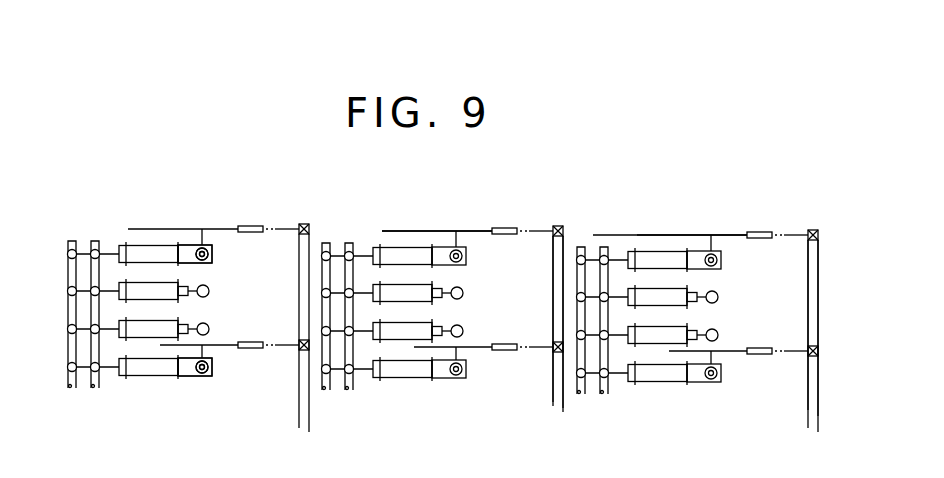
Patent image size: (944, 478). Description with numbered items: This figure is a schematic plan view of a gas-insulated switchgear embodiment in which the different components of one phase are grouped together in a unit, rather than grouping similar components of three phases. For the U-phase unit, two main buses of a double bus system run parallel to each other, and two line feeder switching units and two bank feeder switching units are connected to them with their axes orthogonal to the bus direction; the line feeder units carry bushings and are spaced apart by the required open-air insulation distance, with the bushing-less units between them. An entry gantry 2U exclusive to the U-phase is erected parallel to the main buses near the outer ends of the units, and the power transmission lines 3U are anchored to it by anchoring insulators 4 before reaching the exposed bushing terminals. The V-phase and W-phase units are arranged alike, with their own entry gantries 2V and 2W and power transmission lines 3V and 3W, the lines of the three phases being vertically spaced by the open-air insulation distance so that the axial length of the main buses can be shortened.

The power transmission lines of U-phase 3U is at (186, 229).
The anchoring insulators 4 is at (281, 224).
The entry gantry 2U is at (297, 424).
The power transmission lines of V-phase 3V is at (413, 232).
The entry gantry 2V is at (552, 390).
The power transmission lines of W-phase 3W is at (646, 235).
The entry gantry 2W is at (806, 418).